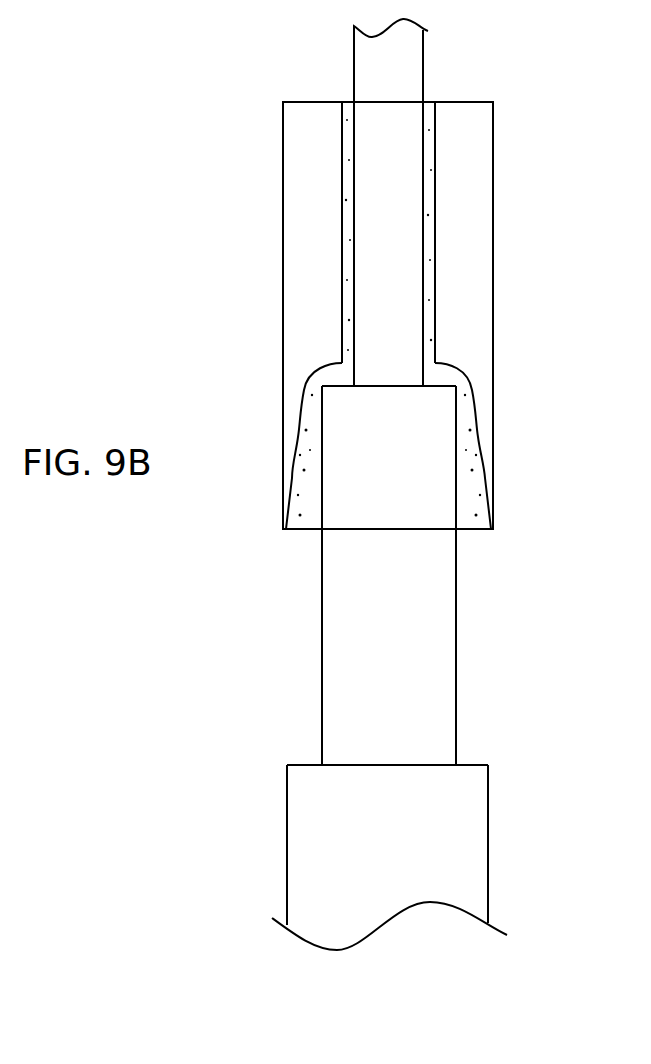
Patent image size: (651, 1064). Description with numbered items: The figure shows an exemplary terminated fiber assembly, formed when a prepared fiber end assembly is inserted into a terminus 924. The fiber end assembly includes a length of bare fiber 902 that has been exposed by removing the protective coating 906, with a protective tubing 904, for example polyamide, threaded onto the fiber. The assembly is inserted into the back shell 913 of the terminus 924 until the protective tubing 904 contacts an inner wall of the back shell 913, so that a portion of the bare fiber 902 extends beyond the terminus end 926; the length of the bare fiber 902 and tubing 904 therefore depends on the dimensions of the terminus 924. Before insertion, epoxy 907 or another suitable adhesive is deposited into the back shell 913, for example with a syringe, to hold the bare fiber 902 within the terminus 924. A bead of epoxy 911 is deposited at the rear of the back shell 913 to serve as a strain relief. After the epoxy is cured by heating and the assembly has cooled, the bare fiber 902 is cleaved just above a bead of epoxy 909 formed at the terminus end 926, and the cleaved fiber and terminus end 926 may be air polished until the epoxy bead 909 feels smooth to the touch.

The bare fiber 902 is at (390, 150).
The protective tubing 904 is at (408, 623).
The protective coating 906 is at (447, 827).
The epoxy 907 is at (427, 323).
The bead of epoxy 909 is at (350, 102).
The bead of epoxy 911 is at (472, 512).
The back shell 913 is at (272, 484).
The terminus 924 is at (465, 241).
The terminus end 926 is at (463, 102).